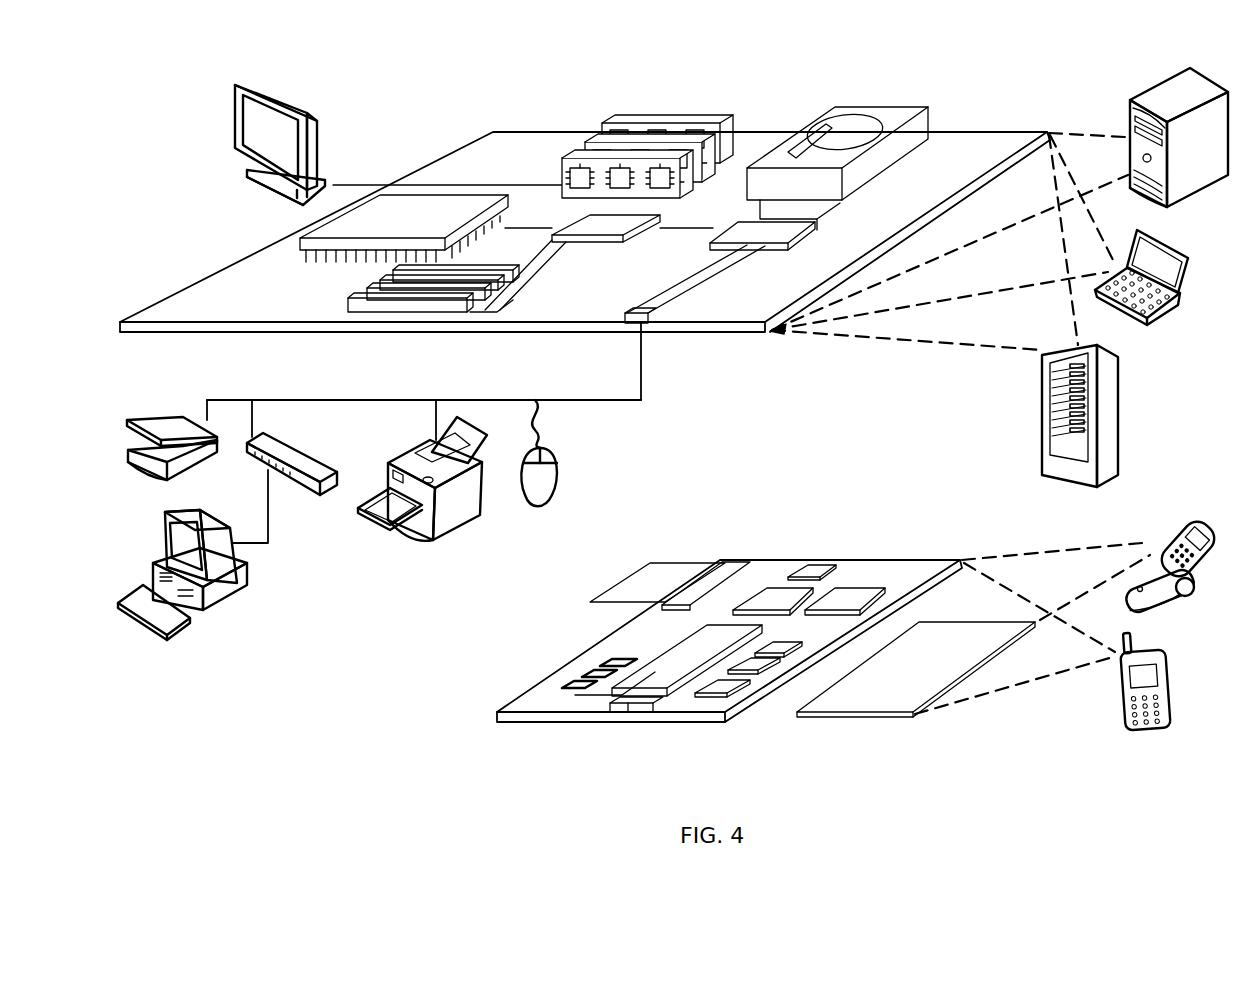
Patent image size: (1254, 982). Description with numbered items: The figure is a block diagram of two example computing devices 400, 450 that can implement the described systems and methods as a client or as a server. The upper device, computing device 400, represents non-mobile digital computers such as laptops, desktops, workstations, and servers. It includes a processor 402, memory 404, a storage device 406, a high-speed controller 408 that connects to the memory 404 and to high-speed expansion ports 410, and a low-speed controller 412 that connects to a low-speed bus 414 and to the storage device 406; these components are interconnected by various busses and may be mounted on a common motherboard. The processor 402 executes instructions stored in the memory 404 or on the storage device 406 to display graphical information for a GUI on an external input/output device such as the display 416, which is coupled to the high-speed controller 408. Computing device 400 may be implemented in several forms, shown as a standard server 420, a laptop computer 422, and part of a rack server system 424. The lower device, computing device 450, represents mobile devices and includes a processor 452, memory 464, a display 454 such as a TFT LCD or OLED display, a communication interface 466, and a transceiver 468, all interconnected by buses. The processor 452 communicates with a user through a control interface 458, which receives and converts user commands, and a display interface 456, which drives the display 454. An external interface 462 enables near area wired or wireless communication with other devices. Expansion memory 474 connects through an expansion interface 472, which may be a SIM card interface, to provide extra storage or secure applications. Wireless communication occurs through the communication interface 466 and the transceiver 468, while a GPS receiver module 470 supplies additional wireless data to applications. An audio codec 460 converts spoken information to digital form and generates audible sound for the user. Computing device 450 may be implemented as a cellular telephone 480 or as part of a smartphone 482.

The computing device 400 is at (152, 93).
The processor 402 is at (300, 242).
The memory 404 is at (606, 120).
The storage device 406 is at (827, 113).
The high-speed controller 408 is at (585, 225).
The high-speed expansion ports 410 is at (367, 297).
The low-speed controller 412 is at (750, 228).
The low-speed bus 414 is at (645, 322).
The display 416 is at (238, 83).
The standard server 420 is at (1118, 118).
The laptop computer 422 is at (1190, 252).
The rack server system 424 is at (1042, 440).
The computing device 450 is at (470, 720).
The processor 452 is at (662, 692).
The display 454 is at (885, 697).
The display interface 456 is at (730, 694).
The control interface 458 is at (762, 672).
The audio codec 460 is at (782, 652).
The external interface 462 is at (628, 715).
The memory 464 is at (582, 674).
The communication interface 466 is at (775, 600).
The transceiver 468 is at (845, 597).
The GPS receiver module 470 is at (817, 565).
The expansion interface 472 is at (713, 573).
The expansion memory 474 is at (662, 574).
The cellular telephone 480 is at (1180, 530).
The smartphone 482 is at (1120, 688).